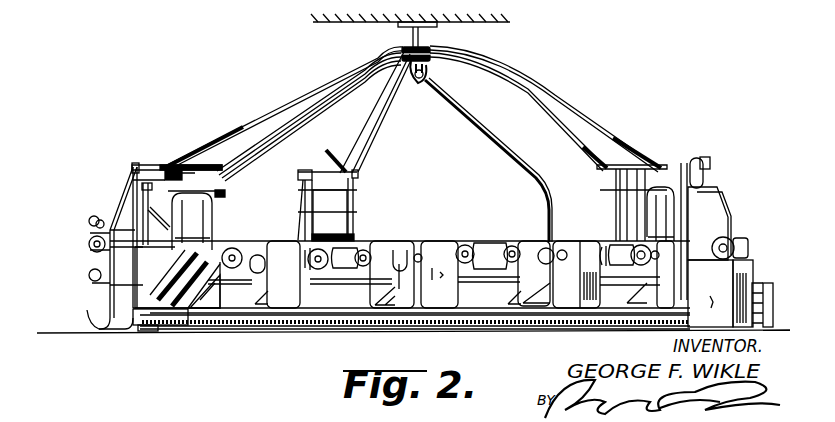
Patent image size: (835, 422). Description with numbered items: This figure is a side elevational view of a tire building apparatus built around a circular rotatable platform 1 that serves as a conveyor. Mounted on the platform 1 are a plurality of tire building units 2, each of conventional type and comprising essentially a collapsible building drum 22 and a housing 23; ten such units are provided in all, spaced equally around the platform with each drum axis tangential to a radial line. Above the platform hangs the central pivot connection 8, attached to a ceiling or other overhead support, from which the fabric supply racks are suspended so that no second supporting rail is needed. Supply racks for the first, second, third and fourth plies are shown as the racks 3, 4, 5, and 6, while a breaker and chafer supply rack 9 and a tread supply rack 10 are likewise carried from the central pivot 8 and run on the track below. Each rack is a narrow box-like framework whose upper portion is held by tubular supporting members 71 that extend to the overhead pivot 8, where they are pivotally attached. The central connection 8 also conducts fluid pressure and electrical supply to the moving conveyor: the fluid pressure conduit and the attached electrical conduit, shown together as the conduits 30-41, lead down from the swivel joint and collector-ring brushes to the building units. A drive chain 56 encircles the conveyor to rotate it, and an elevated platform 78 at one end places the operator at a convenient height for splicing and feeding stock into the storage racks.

The circular rotatable platform 1 is at (486, 323).
The tire building unit 2 is at (449, 218).
The first ply supply rack 3 is at (733, 177).
The second ply supply rack 4 is at (654, 143).
The third ply supply rack 5 is at (325, 157).
The fourth ply supply rack 6 is at (201, 156).
The central pivot connection 8 is at (409, 106).
The breaker and chafer supply rack 9 is at (103, 196).
The tread supply rack 10 is at (140, 270).
The collapsible building drum 22 is at (504, 226).
The housing 23 is at (437, 240).
The fluid pressure conduit and electrical conduit 30-41 is at (508, 156).
The drive chain 56 is at (304, 327).
The tubular supporting members 71 is at (593, 112).
The elevated platform 78 is at (767, 294).